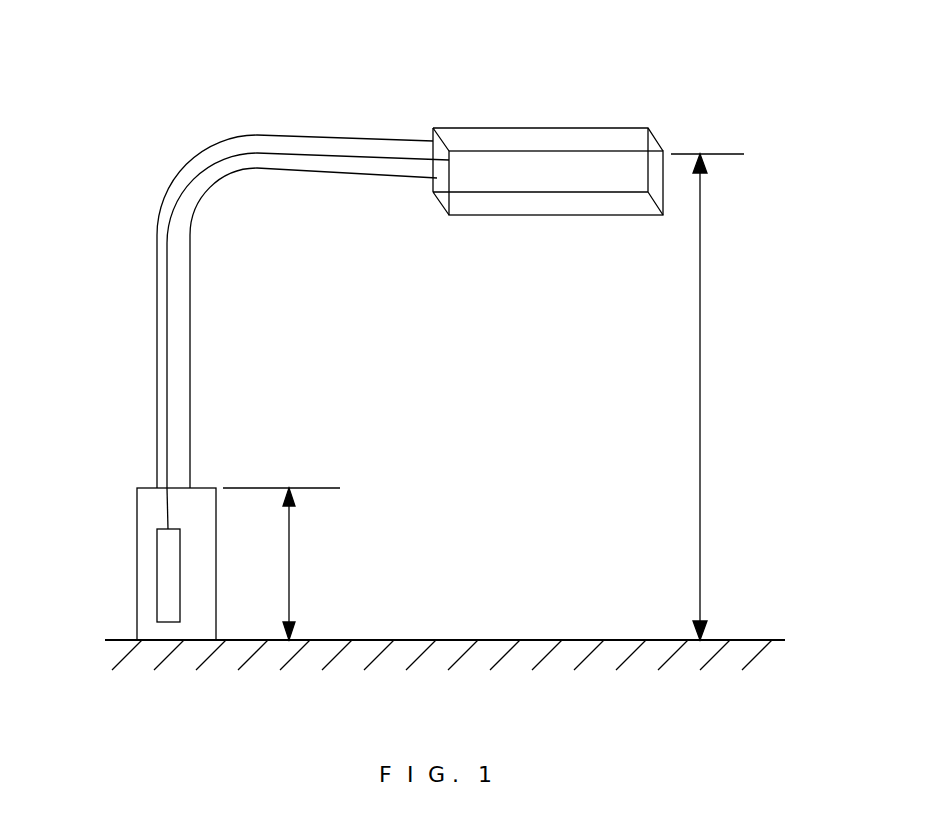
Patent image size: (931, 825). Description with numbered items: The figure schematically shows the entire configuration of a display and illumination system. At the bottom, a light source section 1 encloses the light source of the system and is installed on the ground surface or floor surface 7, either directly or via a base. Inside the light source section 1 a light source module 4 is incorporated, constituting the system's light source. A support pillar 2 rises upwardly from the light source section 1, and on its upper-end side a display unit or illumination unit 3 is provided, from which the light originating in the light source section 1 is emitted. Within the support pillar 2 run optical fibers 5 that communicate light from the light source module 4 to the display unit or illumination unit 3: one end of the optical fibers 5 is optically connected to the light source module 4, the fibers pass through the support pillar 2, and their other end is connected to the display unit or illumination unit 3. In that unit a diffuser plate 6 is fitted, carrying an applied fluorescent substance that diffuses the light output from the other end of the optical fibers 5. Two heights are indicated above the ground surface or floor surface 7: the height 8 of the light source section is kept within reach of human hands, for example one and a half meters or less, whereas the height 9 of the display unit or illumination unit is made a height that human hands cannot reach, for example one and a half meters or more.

The light source section 1 is at (137, 573).
The support pillar 2 is at (303, 262).
The display unit or illumination unit 3 is at (548, 174).
The light source module 4 is at (157, 528).
The optical fibers 5 is at (212, 173).
The diffuser plate 6 is at (556, 128).
The ground surface or floor surface 7 is at (480, 660).
The height (h) of the light source section 8 is at (281, 564).
The height (H) of the display unit or illumination unit 9 is at (707, 397).